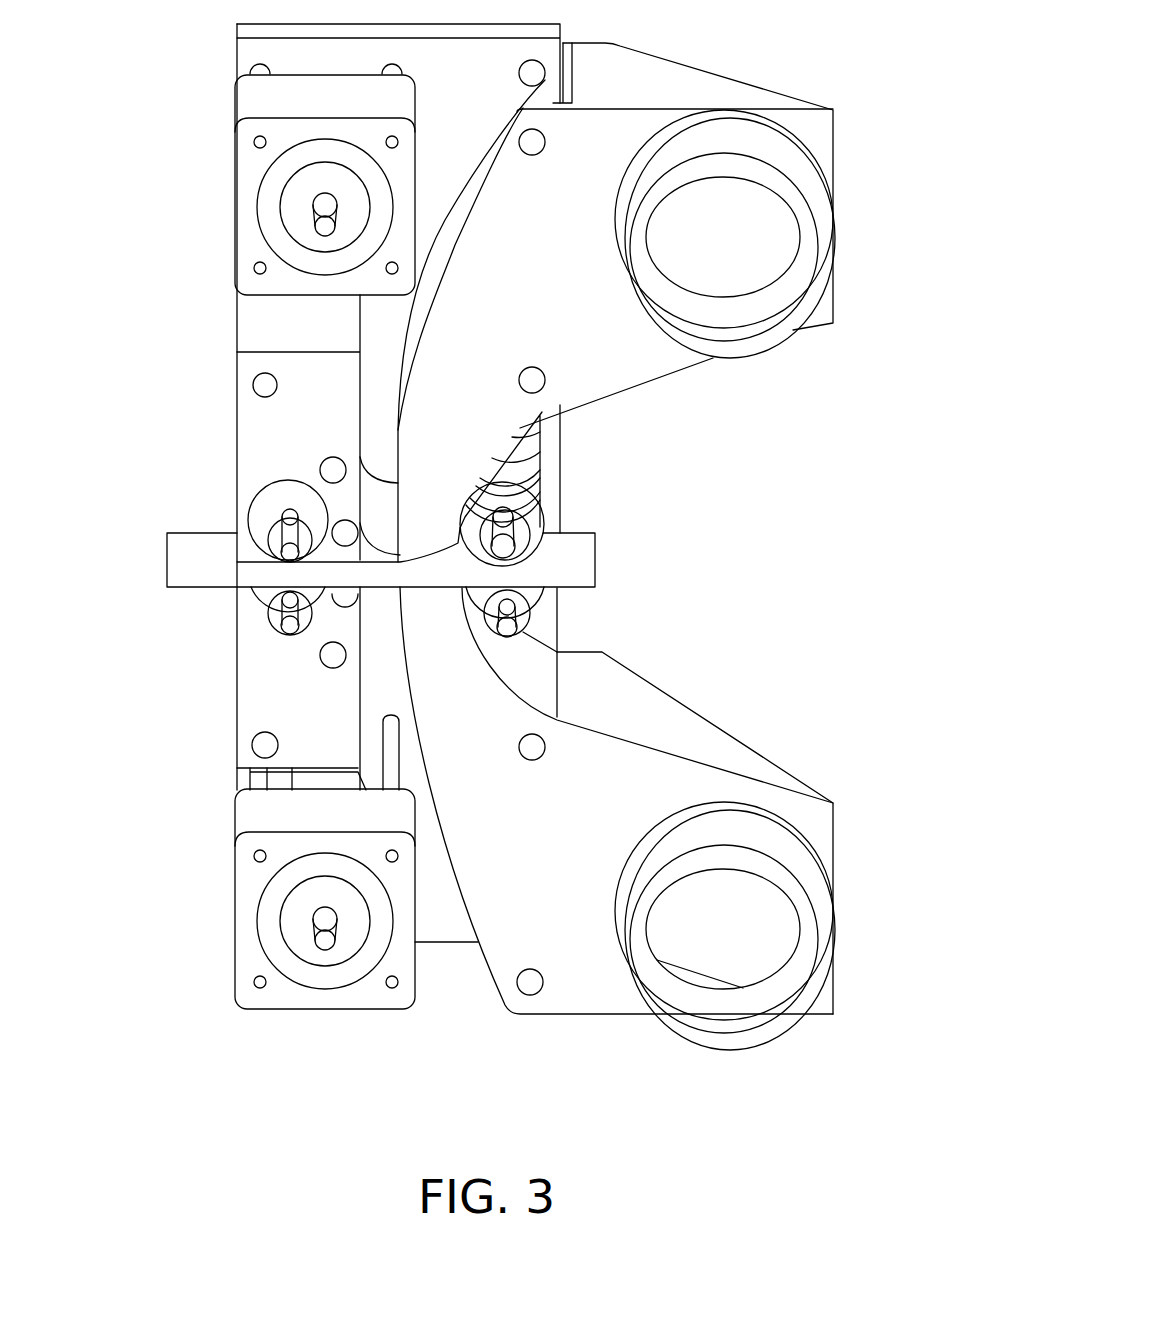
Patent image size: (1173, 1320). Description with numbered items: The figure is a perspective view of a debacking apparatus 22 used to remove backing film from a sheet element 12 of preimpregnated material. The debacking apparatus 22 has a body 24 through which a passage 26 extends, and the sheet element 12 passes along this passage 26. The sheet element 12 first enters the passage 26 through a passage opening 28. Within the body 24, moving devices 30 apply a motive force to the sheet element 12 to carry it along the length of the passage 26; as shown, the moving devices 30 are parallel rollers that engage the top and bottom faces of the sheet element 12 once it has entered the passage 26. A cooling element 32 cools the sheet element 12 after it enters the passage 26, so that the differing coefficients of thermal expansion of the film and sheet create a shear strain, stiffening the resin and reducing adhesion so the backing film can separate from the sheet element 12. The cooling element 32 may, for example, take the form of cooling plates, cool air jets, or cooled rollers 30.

The sheet element 12 is at (188, 560).
The debacking apparatus 22 is at (885, 190).
The body 24 is at (757, 773).
The passage 26 is at (398, 558).
The passage opening 28 is at (265, 560).
The moving devices 30 is at (295, 510).
The cooling element 32 is at (297, 618).